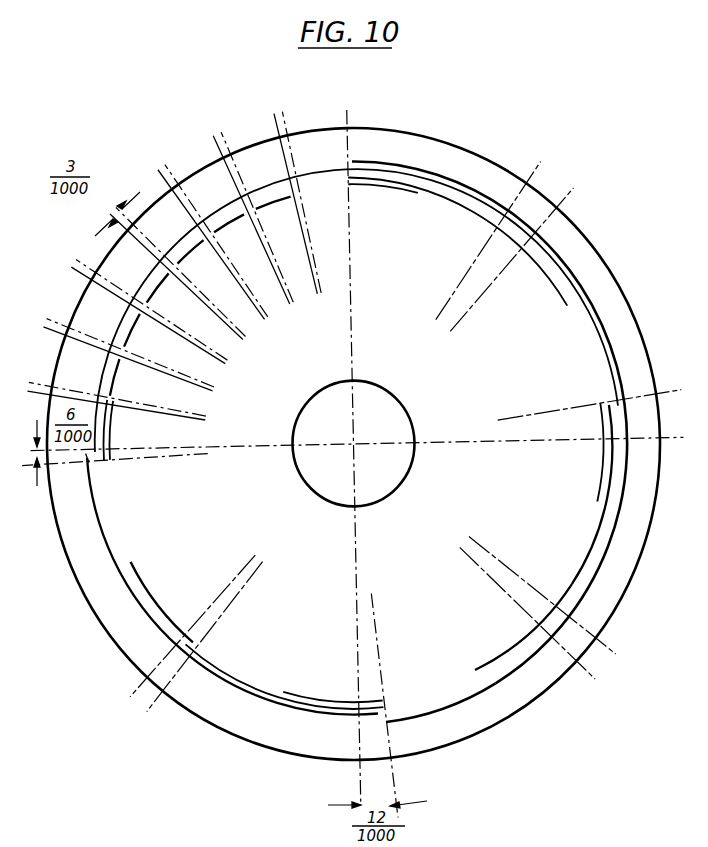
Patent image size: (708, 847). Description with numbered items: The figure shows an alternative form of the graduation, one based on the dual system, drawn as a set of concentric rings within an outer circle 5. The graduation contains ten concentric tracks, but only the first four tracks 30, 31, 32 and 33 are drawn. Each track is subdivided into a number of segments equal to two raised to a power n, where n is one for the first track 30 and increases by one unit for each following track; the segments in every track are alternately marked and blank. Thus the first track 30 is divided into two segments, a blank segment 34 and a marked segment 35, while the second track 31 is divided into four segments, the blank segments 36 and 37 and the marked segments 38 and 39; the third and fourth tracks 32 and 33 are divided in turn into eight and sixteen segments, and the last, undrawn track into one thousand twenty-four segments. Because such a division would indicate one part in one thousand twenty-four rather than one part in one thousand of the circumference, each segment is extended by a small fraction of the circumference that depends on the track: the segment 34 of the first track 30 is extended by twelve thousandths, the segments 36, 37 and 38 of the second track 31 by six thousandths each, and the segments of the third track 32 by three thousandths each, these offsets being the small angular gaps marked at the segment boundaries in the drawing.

The outer ring housing 5 is at (508, 186).
The first track 30 is at (350, 162).
The second track 31 is at (350, 168).
The third track 32 is at (350, 177).
The fourth track 33 is at (350, 186).
The blank segment of first track 34 is at (375, 723).
The marked segment of first track 35 is at (409, 716).
The blank segment of second track 36 is at (96, 460).
The blank segment of second track 37 is at (550, 616).
The marked segment of second track 38 is at (96, 492).
The marked segment of second track 39 is at (582, 568).